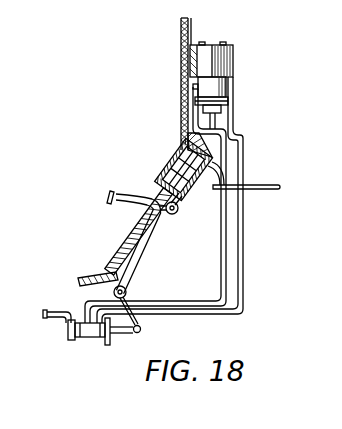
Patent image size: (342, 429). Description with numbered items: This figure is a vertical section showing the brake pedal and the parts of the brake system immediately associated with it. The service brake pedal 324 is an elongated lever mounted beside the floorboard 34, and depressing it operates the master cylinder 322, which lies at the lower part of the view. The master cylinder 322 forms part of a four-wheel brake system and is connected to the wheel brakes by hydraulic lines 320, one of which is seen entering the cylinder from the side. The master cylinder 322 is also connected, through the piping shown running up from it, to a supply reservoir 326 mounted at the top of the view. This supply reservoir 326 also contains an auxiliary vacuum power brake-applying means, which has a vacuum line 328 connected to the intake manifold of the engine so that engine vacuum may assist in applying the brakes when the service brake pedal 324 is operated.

The floorboard 34 is at (140, 244).
The hydraulic lines 320 is at (46, 315).
The master cylinder 322 is at (93, 331).
The service brake pedal 324 is at (144, 250).
The supply reservoir 326 is at (215, 62).
The vacuum line 328 is at (275, 185).